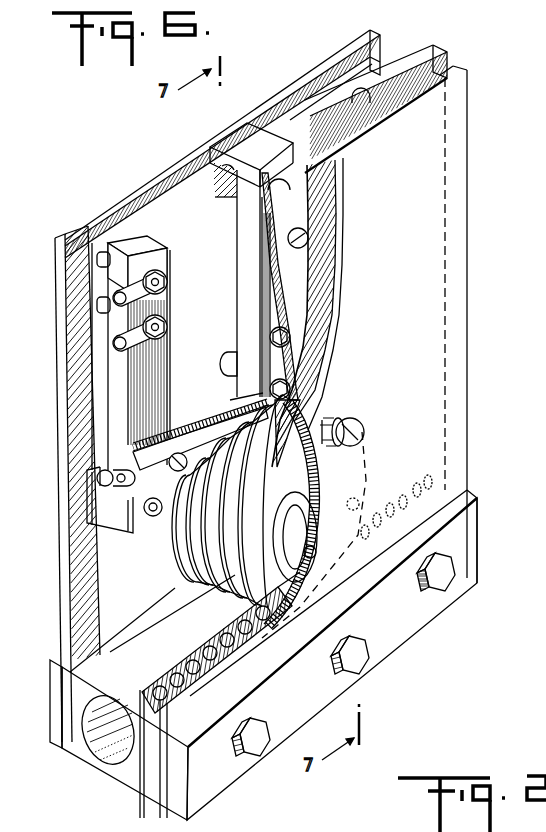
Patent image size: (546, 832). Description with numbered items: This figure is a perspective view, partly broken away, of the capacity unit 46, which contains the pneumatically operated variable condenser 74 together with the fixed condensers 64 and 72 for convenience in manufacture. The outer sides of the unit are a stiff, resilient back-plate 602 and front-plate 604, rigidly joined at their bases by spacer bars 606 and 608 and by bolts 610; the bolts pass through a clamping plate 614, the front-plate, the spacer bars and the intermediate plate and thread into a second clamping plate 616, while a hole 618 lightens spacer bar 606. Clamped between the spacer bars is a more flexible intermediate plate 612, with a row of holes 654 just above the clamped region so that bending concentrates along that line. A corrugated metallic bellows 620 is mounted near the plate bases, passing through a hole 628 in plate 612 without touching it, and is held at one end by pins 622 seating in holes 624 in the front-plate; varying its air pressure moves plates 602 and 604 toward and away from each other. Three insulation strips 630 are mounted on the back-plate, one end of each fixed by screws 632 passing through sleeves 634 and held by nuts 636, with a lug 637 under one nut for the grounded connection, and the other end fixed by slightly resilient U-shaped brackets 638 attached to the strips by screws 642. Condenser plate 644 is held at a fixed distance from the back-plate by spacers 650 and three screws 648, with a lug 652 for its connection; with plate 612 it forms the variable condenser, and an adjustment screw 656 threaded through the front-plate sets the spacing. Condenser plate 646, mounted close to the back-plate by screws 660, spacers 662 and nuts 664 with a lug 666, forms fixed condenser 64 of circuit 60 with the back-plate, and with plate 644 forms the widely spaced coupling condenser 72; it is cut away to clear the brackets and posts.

The capacity unit 46 is at (134, 134).
The circuit 60 is at (347, 831).
The fixed condenser 64 is at (352, 60).
The fixed condenser 72 is at (389, 70).
The variable condenser 74 is at (455, 52).
The back-plate 602 is at (62, 548).
The front-plate 604 is at (468, 296).
The spacer bar 606 is at (105, 767).
The spacer bar 608 is at (156, 782).
The bolts 610 is at (447, 586).
The intermediate plate 612 is at (318, 306).
The clamping plate 614 is at (470, 520).
The clamping plate 616 is at (63, 736).
The hole 618 is at (110, 718).
The bellows 620 is at (206, 556).
The pins 622 is at (352, 503).
The holes 624 is at (318, 552).
The hole 628 is at (262, 640).
The insulation strips 630 is at (250, 219).
The screws 632 is at (167, 332).
The sleeves 634 is at (105, 316).
The nuts 636 is at (165, 325).
The lug 637 is at (136, 338).
The U-shaped metal brackets 638 is at (240, 140).
The screws 642 is at (155, 517).
The condenser plate 644 is at (300, 193).
The condenser plate 646 is at (305, 110).
The screws 648 is at (306, 232).
The spacers 650 is at (149, 372).
The lug 652 is at (88, 466).
The holes 654 is at (425, 482).
The adjustment screw 656 is at (360, 434).
The screws 660 is at (165, 282).
The spacers 662 is at (115, 247).
The nuts 664 is at (165, 276).
The lug 666 is at (118, 286).